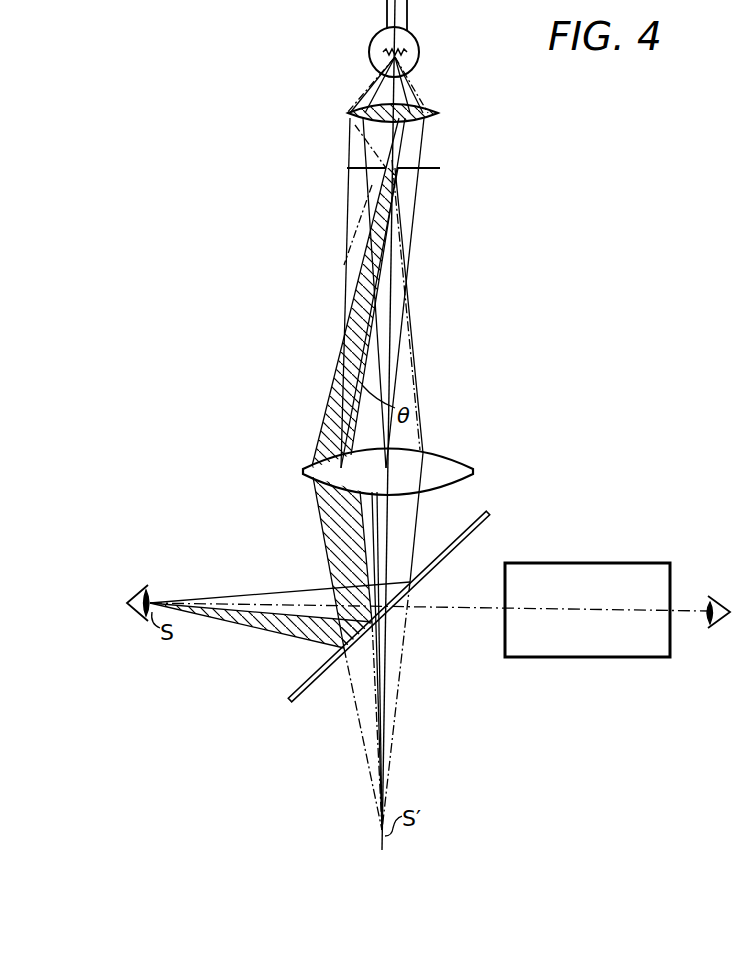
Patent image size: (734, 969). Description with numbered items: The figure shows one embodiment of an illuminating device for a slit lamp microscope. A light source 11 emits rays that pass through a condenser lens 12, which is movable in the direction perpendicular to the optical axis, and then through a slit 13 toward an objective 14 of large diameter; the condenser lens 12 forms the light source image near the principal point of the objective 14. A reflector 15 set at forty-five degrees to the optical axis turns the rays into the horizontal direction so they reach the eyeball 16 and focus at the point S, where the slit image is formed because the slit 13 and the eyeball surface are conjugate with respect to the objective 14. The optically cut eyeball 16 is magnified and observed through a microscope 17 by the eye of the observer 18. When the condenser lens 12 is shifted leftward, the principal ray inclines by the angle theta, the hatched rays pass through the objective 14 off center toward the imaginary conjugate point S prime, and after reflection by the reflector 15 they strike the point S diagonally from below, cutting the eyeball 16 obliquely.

The light source 11 is at (419, 50).
The condenser lens 12 is at (436, 110).
The slit 13 is at (392, 168).
The objective 14 is at (474, 471).
The reflector 15 is at (490, 514).
The eyeball 16 is at (152, 590).
The microscope 17 is at (605, 576).
The eye of the observer 18 is at (707, 600).